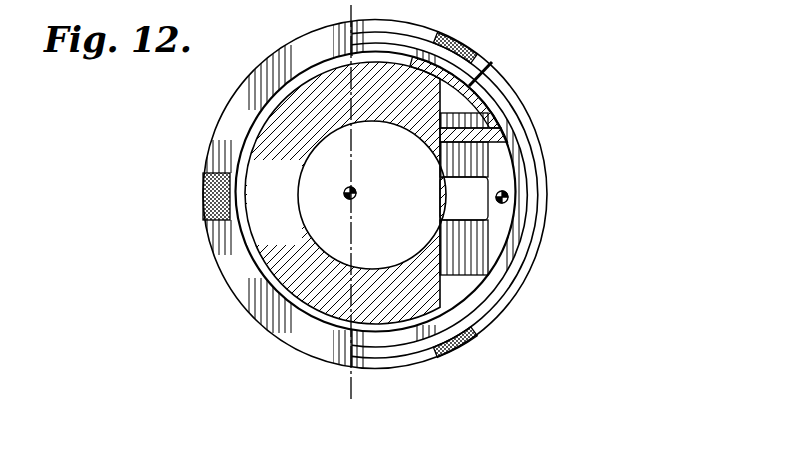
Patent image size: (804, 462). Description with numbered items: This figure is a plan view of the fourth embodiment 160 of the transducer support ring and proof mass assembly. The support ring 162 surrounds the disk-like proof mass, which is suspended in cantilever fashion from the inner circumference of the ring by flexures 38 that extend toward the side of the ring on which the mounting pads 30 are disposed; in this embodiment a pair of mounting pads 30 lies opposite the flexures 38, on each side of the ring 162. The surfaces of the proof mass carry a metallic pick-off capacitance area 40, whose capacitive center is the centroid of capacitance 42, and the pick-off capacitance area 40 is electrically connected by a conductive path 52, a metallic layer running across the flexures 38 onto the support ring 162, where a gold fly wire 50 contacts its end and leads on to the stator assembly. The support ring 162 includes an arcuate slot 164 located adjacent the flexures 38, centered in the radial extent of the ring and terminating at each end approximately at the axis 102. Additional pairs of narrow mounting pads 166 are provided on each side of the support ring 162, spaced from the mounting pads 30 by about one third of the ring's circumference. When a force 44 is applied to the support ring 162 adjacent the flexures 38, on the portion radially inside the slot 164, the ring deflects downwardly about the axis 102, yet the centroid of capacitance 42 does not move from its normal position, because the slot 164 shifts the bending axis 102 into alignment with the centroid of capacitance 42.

The mounting pads 30 is at (203, 189).
The flexures 38 is at (470, 160).
The pick-off capacitance area 40 is at (290, 209).
The centroid of capacitance 42 is at (355, 190).
The force 44 is at (508, 196).
The gold fly wire 50 is at (500, 57).
The conductive path 52 is at (488, 102).
The axis 102 is at (350, 393).
The fourth embodiment 160 is at (210, 279).
The support ring 162 is at (262, 323).
The arcuate slot 164 is at (483, 308).
The narrow mounting pads 166 is at (463, 44).